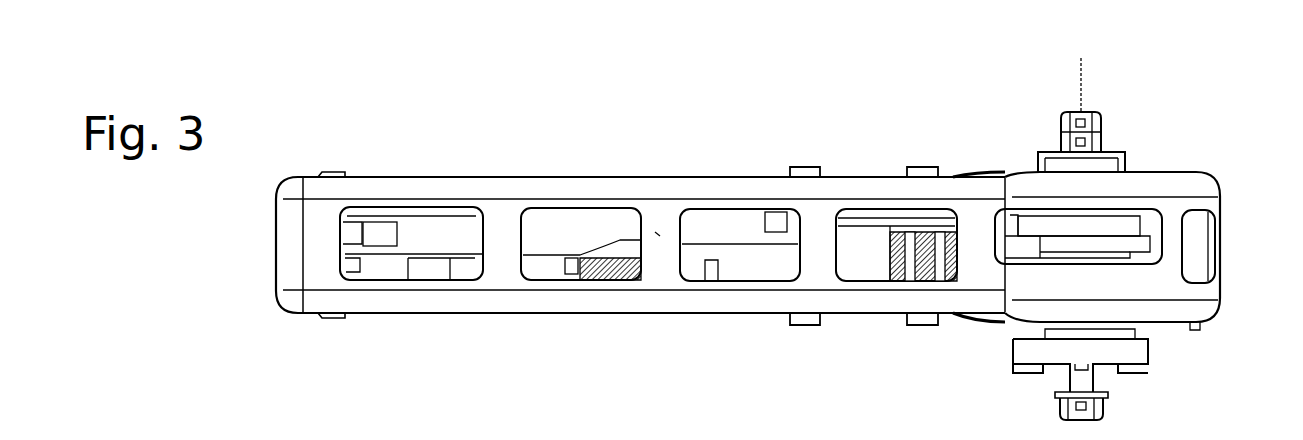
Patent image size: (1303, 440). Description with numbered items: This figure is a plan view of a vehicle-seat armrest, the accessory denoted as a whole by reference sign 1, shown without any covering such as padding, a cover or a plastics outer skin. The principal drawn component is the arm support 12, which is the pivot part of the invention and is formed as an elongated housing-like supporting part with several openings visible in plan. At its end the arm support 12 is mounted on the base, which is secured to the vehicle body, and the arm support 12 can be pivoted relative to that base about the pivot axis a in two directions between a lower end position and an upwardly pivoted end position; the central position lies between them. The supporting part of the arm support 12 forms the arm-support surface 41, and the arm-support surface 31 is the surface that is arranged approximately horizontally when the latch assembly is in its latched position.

The electrical connection box 1 is at (1254, 120).
The arm support 12 is at (517, 190).
The arm-support surface 31 is at (815, 222).
The arm-support surface 41 is at (655, 232).
The pivot axis a is at (1078, 76).